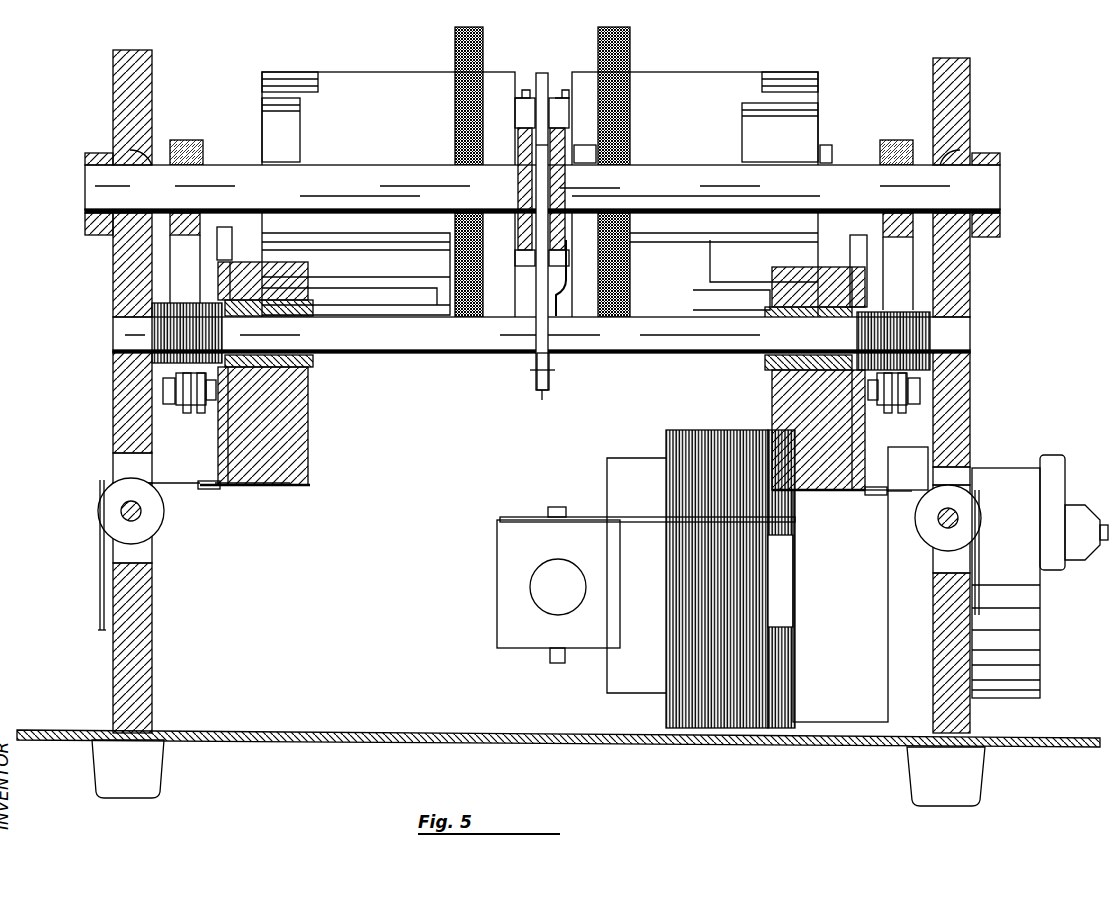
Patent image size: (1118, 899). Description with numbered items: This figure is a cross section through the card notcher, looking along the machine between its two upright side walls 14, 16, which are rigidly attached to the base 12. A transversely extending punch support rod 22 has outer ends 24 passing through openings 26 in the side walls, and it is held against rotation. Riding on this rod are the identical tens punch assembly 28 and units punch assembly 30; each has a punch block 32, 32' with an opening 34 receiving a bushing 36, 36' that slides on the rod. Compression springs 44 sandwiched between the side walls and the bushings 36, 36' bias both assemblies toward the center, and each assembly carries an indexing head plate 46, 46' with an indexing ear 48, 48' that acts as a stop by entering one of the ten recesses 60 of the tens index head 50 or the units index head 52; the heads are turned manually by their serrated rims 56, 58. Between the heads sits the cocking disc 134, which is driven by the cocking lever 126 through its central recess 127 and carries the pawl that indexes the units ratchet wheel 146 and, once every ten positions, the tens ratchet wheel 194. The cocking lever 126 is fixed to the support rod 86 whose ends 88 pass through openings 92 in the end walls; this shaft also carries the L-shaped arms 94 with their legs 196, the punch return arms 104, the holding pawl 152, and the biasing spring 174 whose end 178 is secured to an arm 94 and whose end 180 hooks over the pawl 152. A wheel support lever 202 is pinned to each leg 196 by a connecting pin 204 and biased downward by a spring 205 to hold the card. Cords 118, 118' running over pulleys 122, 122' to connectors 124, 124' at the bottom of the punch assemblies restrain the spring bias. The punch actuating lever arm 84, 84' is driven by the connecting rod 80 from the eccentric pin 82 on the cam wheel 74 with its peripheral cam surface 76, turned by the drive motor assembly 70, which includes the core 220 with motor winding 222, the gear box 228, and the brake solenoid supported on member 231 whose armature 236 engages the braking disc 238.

The base 12 is at (400, 733).
The side wall 14 is at (135, 62).
The side wall 16 is at (955, 62).
The punch support rod 22 is at (460, 355).
The outer ends of the rod 24 is at (140, 333).
The openings 26 is at (165, 393).
The tens punch assembly 28 is at (308, 446).
The units punch assembly 30 is at (772, 402).
The punch block 32 is at (241, 506).
The punch block 32' is at (818, 510).
The opening 34 is at (308, 392).
The bushing 36 is at (292, 367).
The bushing 36' is at (787, 366).
The compression springs 44 is at (190, 318).
The indexing head plate 46 is at (217, 505).
The indexing head plate 46' is at (896, 468).
The indexing ear 48 is at (232, 213).
The indexing ear 48' is at (861, 239).
The tens index head 50 is at (362, 72).
The units index head 52 is at (713, 72).
The serrated rim 56 is at (455, 45).
The serrated rim 58 is at (630, 48).
The recesses 60 is at (300, 125).
The drive motor assembly 70 is at (860, 639).
The cam wheel 74 is at (1042, 644).
The peripheral cam surface 76 is at (1010, 672).
The connecting rod 80 is at (1050, 458).
The eccentrically positioned pin 82 is at (1080, 562).
The punch actuating lever arm 84 is at (992, 240).
The punch actuating lever arm 84' is at (85, 242).
The support rod 86 is at (668, 212).
The ends of support rod 88 is at (100, 185).
The openings 92 is at (130, 150).
The arms 94 is at (200, 140).
The punch return arm 104 is at (95, 150).
The cord 118 is at (1002, 552).
The cord 118' is at (82, 555).
The pulley 122 is at (971, 518).
The pulley 122' is at (151, 517).
The terminal or connector 124 is at (882, 522).
The terminal or connector 124' is at (255, 515).
The cocking lever 126 is at (516, 180).
The central recess 127 is at (567, 180).
The cocking disc 134 is at (542, 73).
The ratchet wheel 146 is at (565, 92).
The holding pawl 152 is at (542, 392).
The biasing spring 174 is at (557, 316).
The spring end 178 is at (620, 140).
The spring end 180 is at (550, 378).
The tens indexing head ratchet wheel 194 is at (520, 92).
The leg 196 is at (185, 270).
The wheel support lever 202 is at (196, 415).
The connecting pin 204 is at (163, 392).
The spring 205 is at (200, 413).
The core 220 is at (680, 430).
The motor winding 222 is at (607, 468).
The gear box 228 is at (512, 650).
The member 231 is at (640, 522).
The solenoid armature 236 is at (572, 607).
The braking disc 238 is at (557, 663).